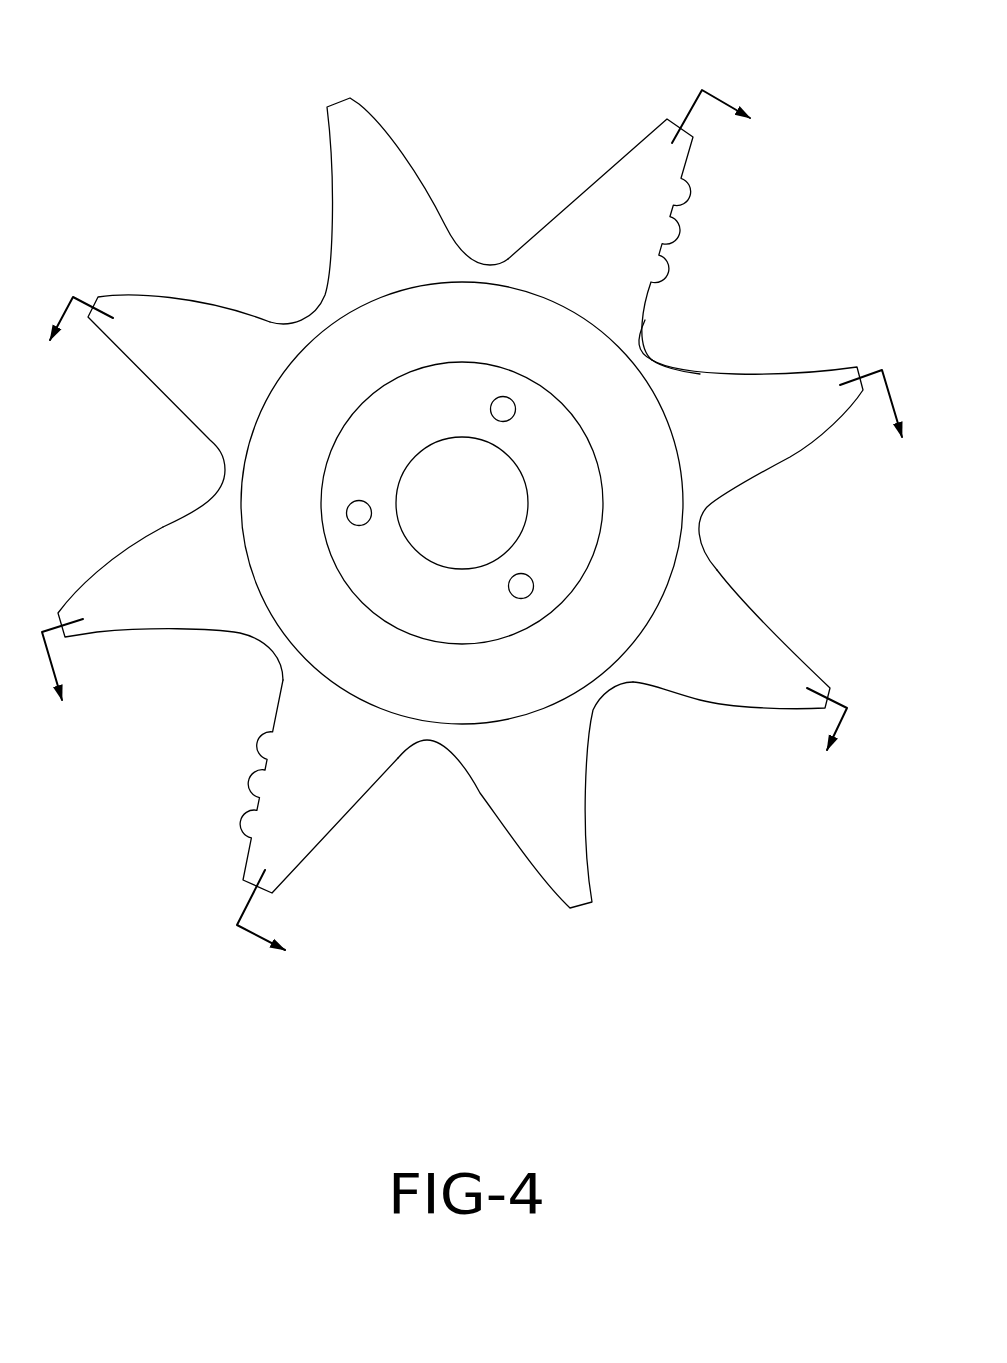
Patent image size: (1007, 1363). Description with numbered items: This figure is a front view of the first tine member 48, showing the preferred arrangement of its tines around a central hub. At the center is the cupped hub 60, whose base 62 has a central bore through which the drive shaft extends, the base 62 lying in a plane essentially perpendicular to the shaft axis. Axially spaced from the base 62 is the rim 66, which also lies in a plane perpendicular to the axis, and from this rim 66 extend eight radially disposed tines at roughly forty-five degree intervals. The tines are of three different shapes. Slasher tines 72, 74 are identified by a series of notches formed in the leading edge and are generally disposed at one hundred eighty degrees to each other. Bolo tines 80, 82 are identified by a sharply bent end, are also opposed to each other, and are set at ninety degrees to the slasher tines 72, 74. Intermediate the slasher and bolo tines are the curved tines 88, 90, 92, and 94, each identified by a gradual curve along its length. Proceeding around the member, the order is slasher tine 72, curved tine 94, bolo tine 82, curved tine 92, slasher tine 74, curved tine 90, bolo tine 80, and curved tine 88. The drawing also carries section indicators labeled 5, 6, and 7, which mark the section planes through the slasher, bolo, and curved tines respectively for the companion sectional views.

The first tine member 48 is at (227, 100).
The cupped hub 60 is at (267, 488).
The base 62 is at (570, 477).
The rim 66 is at (652, 360).
The slasher tine 72 is at (310, 832).
The slasher tine 74 is at (657, 215).
The bolo tine 80 is at (750, 697).
The bolo tine 82 is at (152, 308).
The curved tine 88 is at (577, 860).
The curved tine 90 is at (783, 445).
The curved tine 92 is at (368, 123).
The curved tine 94 is at (217, 622).
The section line 5- 5 is at (503, 534).
The section line 6- 6 is at (441, 538).
The section line 7- 7 is at (479, 551).